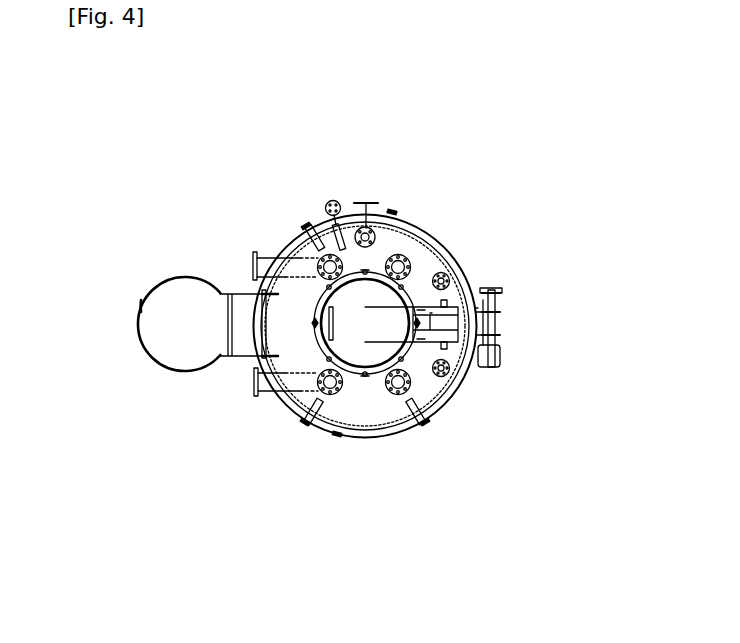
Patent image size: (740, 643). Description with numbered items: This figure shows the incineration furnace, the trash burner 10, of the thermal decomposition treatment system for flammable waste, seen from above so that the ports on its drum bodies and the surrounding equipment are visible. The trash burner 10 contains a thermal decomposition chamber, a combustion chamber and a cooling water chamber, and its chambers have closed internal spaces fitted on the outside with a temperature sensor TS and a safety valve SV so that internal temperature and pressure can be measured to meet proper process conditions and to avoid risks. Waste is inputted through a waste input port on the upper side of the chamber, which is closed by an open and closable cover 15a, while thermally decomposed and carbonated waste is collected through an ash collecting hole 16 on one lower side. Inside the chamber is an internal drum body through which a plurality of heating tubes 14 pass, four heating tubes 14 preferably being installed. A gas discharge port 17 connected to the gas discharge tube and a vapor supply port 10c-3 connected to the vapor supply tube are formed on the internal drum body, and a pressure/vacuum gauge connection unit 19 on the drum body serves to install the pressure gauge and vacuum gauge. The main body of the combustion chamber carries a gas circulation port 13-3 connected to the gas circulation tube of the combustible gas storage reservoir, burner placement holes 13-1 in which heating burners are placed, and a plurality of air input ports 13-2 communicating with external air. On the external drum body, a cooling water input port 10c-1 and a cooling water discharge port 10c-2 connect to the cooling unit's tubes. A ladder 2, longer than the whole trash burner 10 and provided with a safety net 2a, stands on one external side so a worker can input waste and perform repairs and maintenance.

The trash burner 10 is at (501, 103).
The ladder 2 is at (228, 313).
The safety net 2a is at (140, 305).
The burner placement hole 13-1 is at (252, 264).
The air input port 13-2 is at (305, 225).
The gas circulation port 13-3 is at (428, 425).
The heating tube 14 is at (327, 254).
The cover 15a is at (430, 313).
The ash collecting hole 16 is at (496, 306).
The gas discharge port 17 is at (372, 228).
The pressure/vacuum gauge connection unit 19 is at (447, 374).
The cooling water input port 10c-1 is at (338, 438).
The cooling water discharge port 10c-2 is at (396, 210).
The vapor supply port 10c-3 is at (366, 201).
The temperature sensor TS is at (330, 202).
The safety valve SV is at (478, 254).